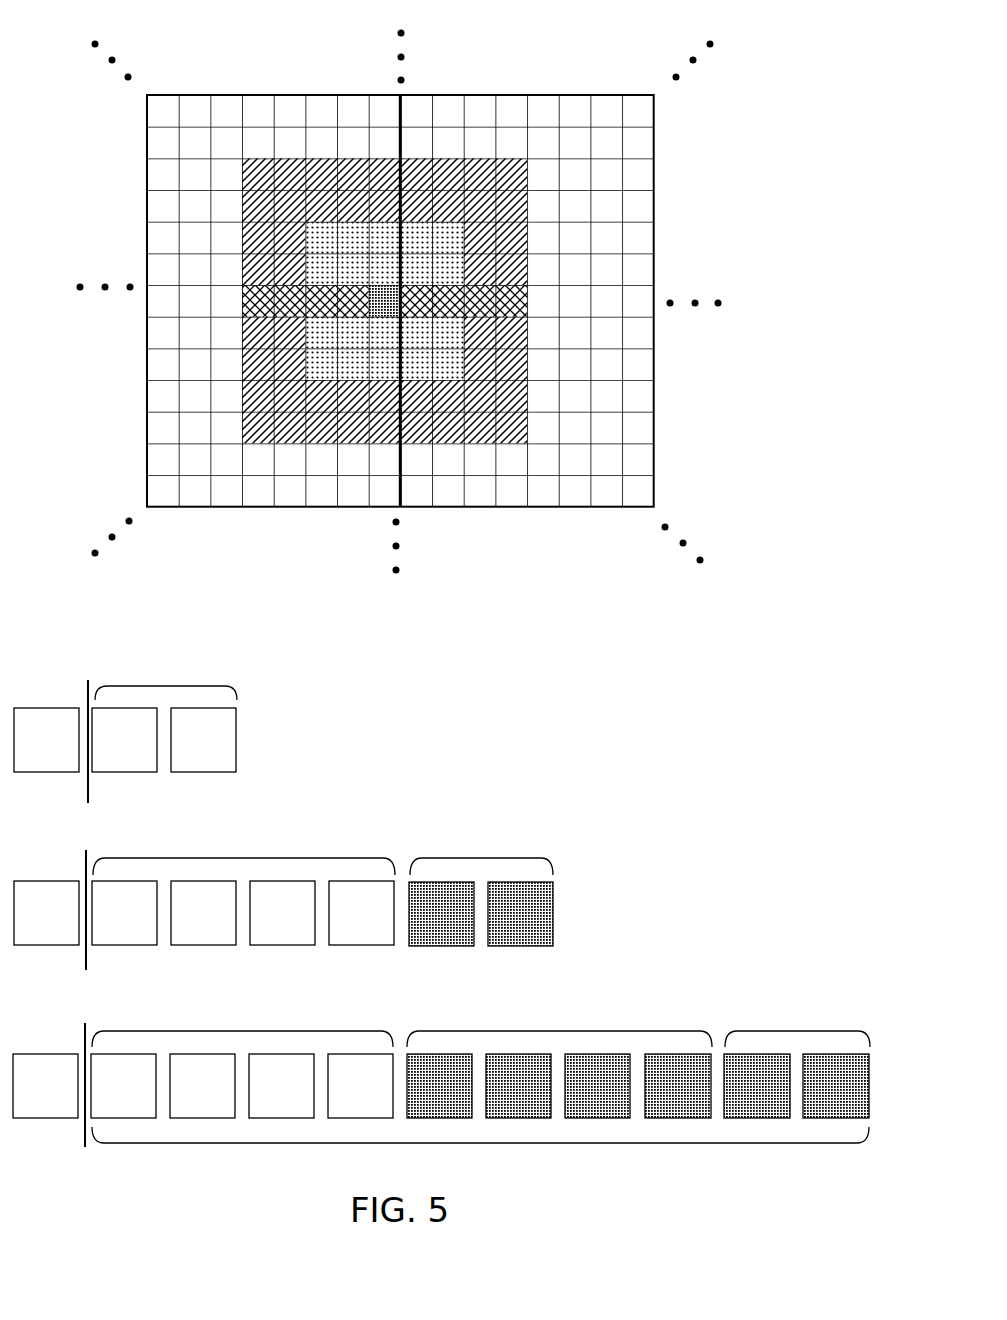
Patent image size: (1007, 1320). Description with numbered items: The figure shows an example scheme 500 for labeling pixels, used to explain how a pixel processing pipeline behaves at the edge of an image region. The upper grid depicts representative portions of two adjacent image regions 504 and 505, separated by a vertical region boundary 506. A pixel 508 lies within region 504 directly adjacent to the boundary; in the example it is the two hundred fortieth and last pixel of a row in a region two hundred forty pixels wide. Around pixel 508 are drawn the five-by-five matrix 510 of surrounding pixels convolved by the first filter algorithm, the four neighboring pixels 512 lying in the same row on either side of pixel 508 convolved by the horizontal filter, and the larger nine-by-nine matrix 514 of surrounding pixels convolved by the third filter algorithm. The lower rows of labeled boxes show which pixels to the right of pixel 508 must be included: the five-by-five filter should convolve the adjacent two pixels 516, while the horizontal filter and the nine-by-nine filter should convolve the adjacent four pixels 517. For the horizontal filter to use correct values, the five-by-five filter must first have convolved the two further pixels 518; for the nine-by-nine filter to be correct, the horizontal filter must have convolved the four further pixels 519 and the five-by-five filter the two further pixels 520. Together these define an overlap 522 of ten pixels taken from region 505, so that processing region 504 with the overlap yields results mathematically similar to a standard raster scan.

The scheme for labeling pixels 500 is at (715, 674).
The image region 504 is at (188, 521).
The image region 505 is at (621, 526).
The region boundary 506 is at (403, 108).
The pixel 508 is at (384, 298).
The 5×5 matrix of pixels 510 is at (325, 220).
The neighboring pixels 512 is at (528, 306).
The 9×9 matrix of pixels 514 is at (509, 448).
The adjacent two pixels 516 is at (167, 683).
The adjacent four pixels 517 is at (245, 856).
The further adjacent pixels 518 is at (482, 856).
The further adjacent pixels 519 is at (559, 1029).
The further adjacent pixels 520 is at (798, 1029).
The overlap 522 is at (473, 1145).